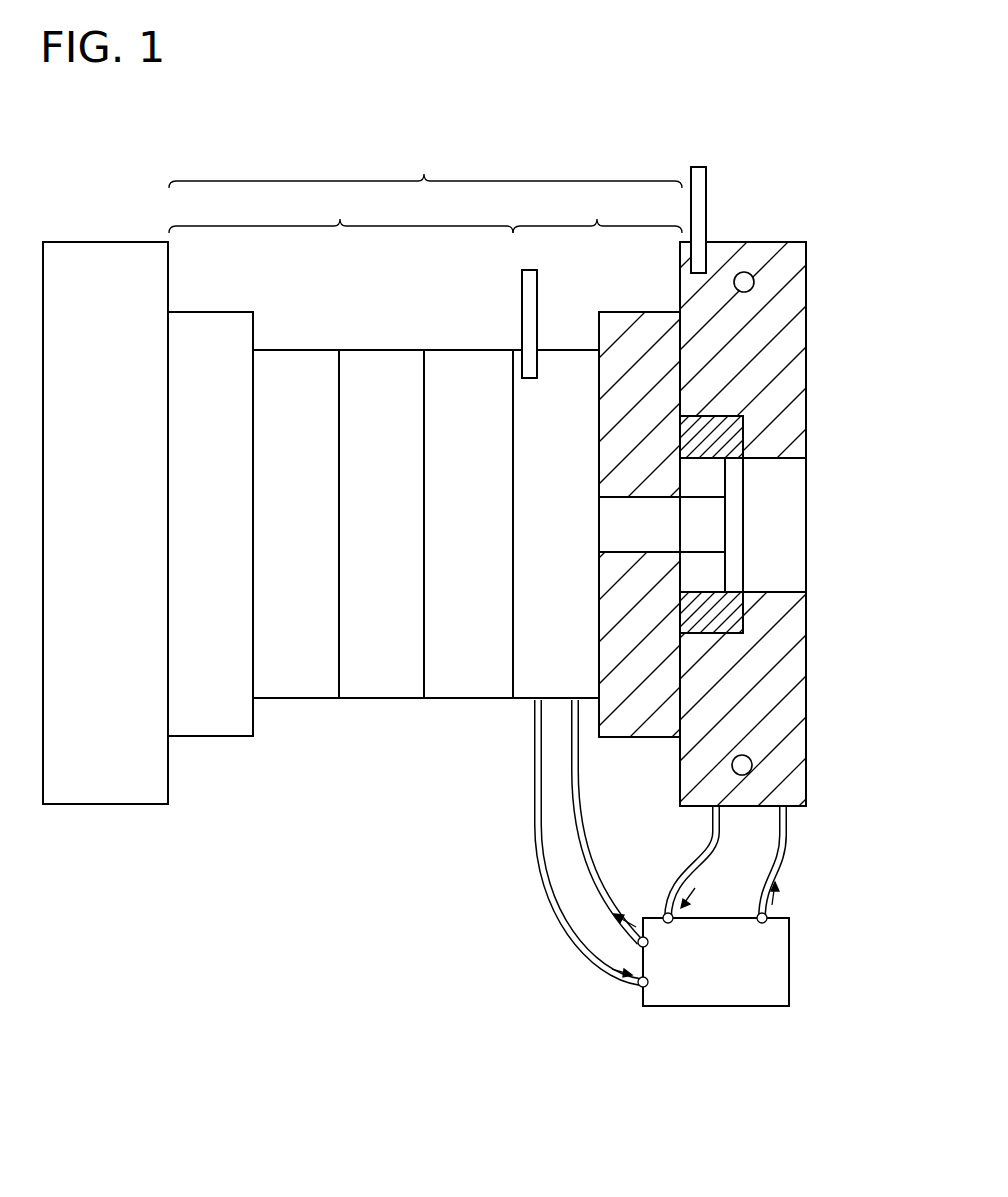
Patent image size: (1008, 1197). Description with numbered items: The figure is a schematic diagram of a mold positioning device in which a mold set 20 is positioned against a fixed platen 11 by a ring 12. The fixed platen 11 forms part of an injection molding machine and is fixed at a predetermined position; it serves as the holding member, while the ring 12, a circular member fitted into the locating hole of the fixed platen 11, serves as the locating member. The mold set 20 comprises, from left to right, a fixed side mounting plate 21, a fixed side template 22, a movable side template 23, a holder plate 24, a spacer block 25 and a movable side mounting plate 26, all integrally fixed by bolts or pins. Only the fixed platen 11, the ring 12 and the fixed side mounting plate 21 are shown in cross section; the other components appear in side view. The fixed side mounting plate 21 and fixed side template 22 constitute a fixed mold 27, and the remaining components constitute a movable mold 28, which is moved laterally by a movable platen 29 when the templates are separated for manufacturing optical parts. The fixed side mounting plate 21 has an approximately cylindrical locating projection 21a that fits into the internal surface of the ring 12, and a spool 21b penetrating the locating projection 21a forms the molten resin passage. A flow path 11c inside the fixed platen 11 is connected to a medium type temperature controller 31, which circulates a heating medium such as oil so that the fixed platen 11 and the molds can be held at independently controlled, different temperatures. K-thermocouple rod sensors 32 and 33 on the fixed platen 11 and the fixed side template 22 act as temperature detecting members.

The fixed platen 11 is at (735, 248).
The flow path 11c is at (753, 285).
The ring 12 is at (748, 433).
The mold set 20 is at (425, 165).
The fixed side mounting plate 21 is at (626, 320).
The locating projection 21a is at (717, 577).
The spool 21b is at (700, 551).
The fixed side template 22 is at (566, 360).
The movable side template 23 is at (470, 363).
The holder plate 24 is at (382, 362).
The spacer block 25 is at (295, 363).
The movable side mounting plate 26 is at (212, 322).
The fixed mold 27 is at (597, 210).
The movable mold 28 is at (341, 210).
The movable platen 29 is at (107, 240).
The medium type temperature controller 31 is at (717, 996).
The K-thermocouple rod sensor 32 is at (697, 175).
The K-thermocouple rod sensor 33 is at (531, 281).